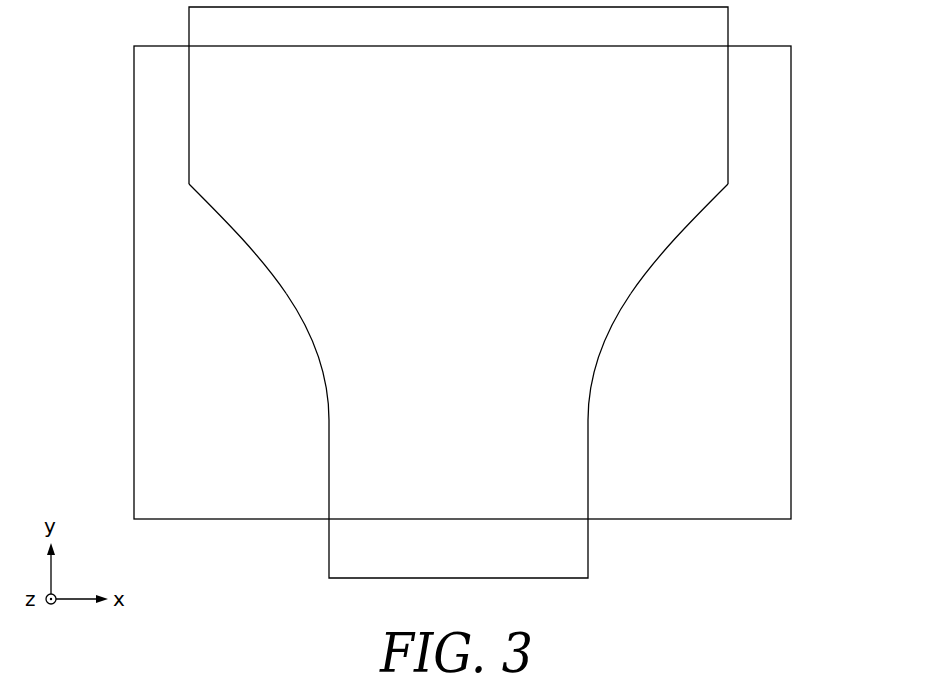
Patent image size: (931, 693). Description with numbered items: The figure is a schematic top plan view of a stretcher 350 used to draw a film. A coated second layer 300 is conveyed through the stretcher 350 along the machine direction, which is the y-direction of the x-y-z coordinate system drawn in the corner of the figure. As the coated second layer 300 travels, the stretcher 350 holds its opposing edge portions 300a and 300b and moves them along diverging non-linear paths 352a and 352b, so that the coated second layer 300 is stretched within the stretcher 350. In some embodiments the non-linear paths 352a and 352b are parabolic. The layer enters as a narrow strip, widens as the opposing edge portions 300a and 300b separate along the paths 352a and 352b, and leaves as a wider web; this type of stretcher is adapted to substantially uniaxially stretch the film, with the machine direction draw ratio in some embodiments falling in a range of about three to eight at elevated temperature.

The stretcher 350 is at (126, 116).
The coated second layer 300 is at (572, 552).
The opposing edge portion 300a is at (307, 338).
The opposing edge portion 300b is at (613, 326).
The diverging non-linear path 352a is at (263, 258).
The diverging non-linear path 352b is at (659, 251).